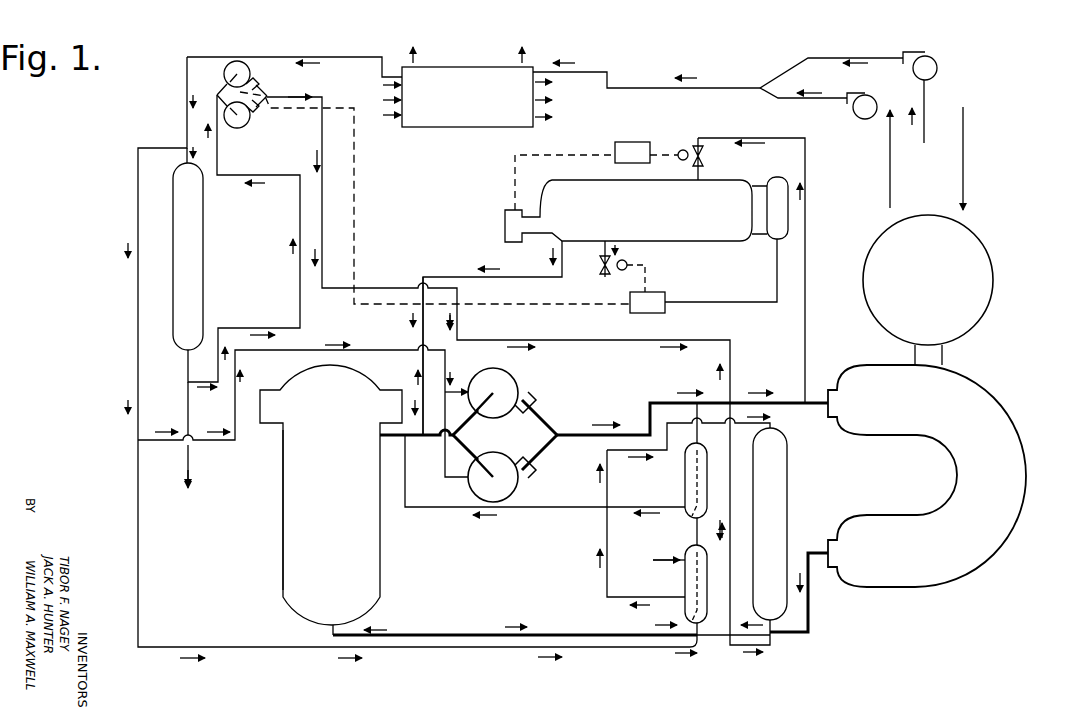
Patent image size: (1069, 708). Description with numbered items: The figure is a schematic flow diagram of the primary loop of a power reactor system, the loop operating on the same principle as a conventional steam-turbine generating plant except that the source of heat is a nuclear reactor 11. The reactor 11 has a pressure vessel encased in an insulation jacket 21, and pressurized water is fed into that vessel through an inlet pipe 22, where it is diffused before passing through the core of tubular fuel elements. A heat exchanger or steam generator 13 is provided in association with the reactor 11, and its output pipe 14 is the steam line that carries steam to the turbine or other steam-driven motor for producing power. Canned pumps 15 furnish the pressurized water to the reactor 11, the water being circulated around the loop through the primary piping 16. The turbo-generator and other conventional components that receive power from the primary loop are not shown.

The nuclear reactor 11 is at (275, 562).
The heat exchanger or steam generator 13 is at (1030, 373).
The output pipe 14 is at (889, 170).
The canned pumps 15 is at (507, 462).
The primary piping 16 is at (423, 438).
The insulation jacket 21 is at (283, 515).
The inlet pipe 22 is at (421, 634).